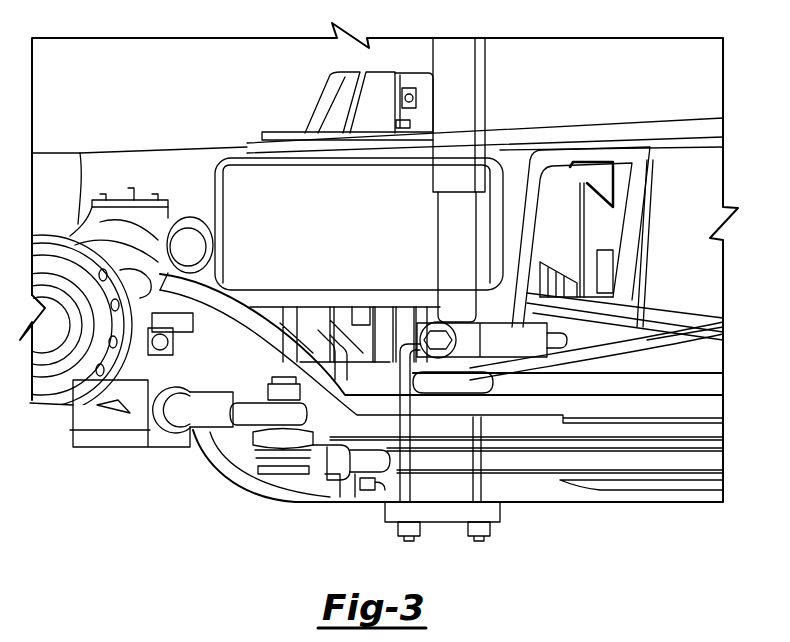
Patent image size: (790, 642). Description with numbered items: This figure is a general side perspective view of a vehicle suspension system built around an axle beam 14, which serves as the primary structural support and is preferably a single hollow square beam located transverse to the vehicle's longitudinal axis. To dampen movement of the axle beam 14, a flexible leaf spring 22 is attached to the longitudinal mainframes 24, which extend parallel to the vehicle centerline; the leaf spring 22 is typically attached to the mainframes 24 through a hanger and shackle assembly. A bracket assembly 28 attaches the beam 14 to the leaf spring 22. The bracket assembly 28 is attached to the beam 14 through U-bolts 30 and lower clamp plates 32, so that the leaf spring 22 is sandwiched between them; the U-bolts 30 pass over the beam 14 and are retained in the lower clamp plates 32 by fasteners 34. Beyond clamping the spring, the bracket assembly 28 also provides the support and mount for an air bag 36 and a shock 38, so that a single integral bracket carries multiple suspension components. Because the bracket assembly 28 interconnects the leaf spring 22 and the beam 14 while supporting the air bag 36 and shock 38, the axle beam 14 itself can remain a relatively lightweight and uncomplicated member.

The axle beam 14 is at (603, 497).
The leaf spring 22 is at (710, 340).
The longitudinal mainframes 24 is at (606, 92).
The bracket assembly 28 is at (380, 325).
The U-bolts 30 is at (478, 498).
The lower clamp plates 32 is at (385, 510).
The fasteners 34 is at (493, 527).
The air bag 36 is at (358, 236).
The shock 38 is at (468, 98).